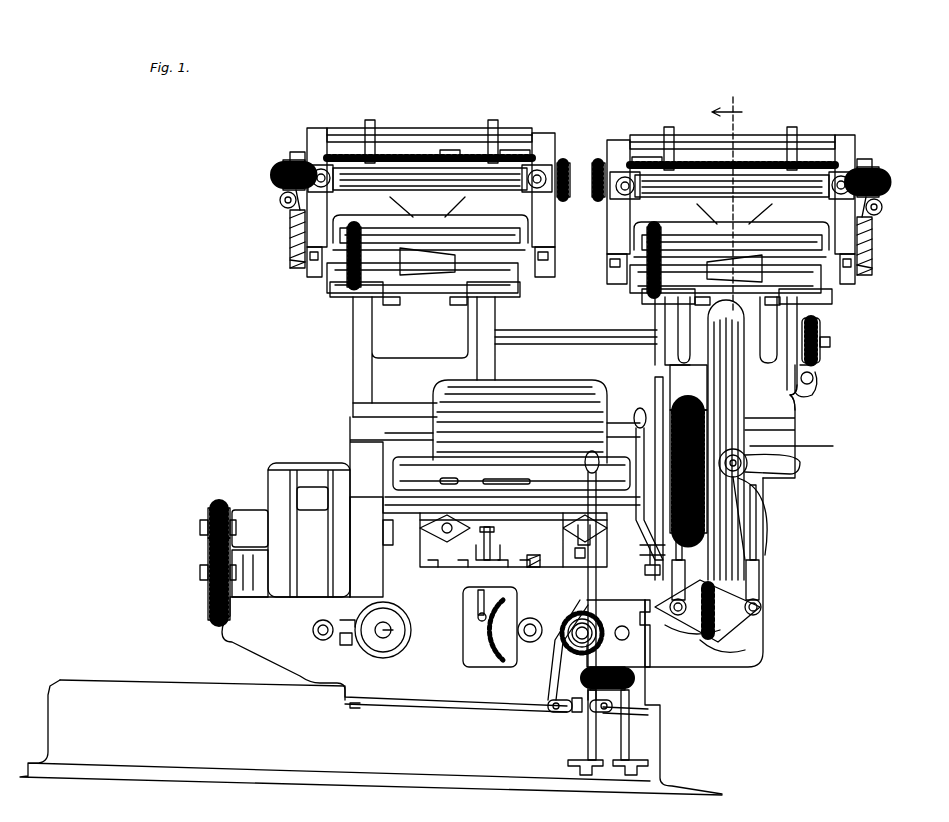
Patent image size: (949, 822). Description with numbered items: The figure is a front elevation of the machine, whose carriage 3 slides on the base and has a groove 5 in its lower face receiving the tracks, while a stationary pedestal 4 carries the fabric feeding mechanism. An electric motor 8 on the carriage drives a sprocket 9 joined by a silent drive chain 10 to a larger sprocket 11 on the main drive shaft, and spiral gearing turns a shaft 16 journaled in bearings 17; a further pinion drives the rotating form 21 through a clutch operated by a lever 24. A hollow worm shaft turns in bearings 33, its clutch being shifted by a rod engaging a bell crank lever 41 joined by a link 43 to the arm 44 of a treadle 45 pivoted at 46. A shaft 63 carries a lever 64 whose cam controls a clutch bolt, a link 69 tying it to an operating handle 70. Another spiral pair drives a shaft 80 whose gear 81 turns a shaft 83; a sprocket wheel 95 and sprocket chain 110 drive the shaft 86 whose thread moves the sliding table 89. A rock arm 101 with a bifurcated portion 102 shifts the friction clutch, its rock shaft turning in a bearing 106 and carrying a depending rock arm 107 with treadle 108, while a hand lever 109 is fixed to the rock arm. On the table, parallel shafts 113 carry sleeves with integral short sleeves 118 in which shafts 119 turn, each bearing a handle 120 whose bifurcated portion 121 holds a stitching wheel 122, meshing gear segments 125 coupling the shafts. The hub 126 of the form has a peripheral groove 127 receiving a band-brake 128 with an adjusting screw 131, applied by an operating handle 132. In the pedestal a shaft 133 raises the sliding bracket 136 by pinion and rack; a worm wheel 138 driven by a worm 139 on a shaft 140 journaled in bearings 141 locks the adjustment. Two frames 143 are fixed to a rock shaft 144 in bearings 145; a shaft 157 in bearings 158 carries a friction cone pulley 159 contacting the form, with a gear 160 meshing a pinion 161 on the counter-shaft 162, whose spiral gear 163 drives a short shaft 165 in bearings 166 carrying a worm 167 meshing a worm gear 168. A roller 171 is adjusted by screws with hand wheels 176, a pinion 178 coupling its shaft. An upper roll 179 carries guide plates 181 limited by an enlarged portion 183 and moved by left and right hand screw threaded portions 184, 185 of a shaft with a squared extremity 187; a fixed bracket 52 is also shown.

The carriage 3 is at (779, 266).
The pedestal 4 is at (775, 498).
The groove 5 is at (290, 645).
The motor 8 is at (275, 470).
The sprocket 9 is at (200, 525).
The silent drive chain 10 is at (212, 510).
The sprocket 11 is at (205, 595).
The shaft 16 is at (440, 530).
The bearings 17 is at (450, 548).
The rotating form 21 is at (735, 384).
The lever 24 is at (448, 478).
The bearings 33 is at (580, 538).
The bell crank lever 41 is at (578, 558).
The link 43 is at (558, 655).
The arm 44 is at (570, 712).
The treadle 45 is at (565, 760).
The pivot 46 is at (556, 712).
The shaft 52 is at (316, 626).
The shaft 63 is at (380, 638).
The lever 64 is at (475, 630).
The link 69 is at (478, 600).
The operating handle 70 is at (492, 534).
The shaft 80 is at (525, 640).
The gear 81 is at (505, 640).
The shaft 83 is at (557, 680).
The shaft 86 is at (622, 626).
The sliding table 89 is at (715, 662).
The sprocket wheel 95 is at (568, 620).
The rock arm 101 is at (600, 658).
The bifurcated portion 102 is at (560, 625).
The bearing 106 is at (605, 692).
The rock arm 107 is at (630, 733).
The treadle 108 is at (640, 762).
The hand lever 109 is at (596, 584).
The sprocket chain 110 is at (588, 618).
The shafts 113 is at (676, 614).
The short sleeve 118 is at (760, 585).
The shaft 119 is at (757, 531).
The handle 120 is at (775, 482).
The bifurcated portion 121 is at (760, 520).
The stitching wheel 122 is at (802, 462).
The gear segment 125 is at (735, 650).
The hub 126 is at (690, 400).
The peripheral groove 127 is at (652, 405).
The band-brake 128 is at (670, 450).
The adjusting screw 131 is at (642, 556).
The operating handle 132 is at (605, 428).
The shaft 133 is at (565, 323).
The sliding bracket 136 is at (400, 338).
The worm wheel 138 is at (820, 322).
The worm 139 is at (815, 378).
The shaft 140 is at (815, 370).
The bearings 141 is at (803, 397).
The frame 143 is at (548, 230).
The rock shaft 144 is at (730, 298).
The bearings 145 is at (362, 300).
The shaft 157 is at (450, 298).
The bearings 158 is at (308, 272).
The friction cone pulley 159 is at (425, 272).
The gear 160 is at (648, 278).
The pinion 161 is at (368, 238).
The counter-shaft 162 is at (418, 240).
The spiral gear 163 is at (290, 262).
The short shaft 165 is at (290, 208).
The bearings 166 is at (282, 198).
The worm 167 is at (280, 203).
The worm gear 168 is at (283, 175).
The roller 171 is at (452, 172).
The hand wheels 176 is at (326, 150).
The pinion 178 is at (600, 163).
The upper roll 179 is at (350, 135).
The guide plates 181 is at (372, 122).
The enlarged portion 183 is at (448, 150).
The left hand screw threaded portion 184 is at (392, 155).
The right hand screw threaded portion 185 is at (510, 150).
The squared extremity 187 is at (295, 152).